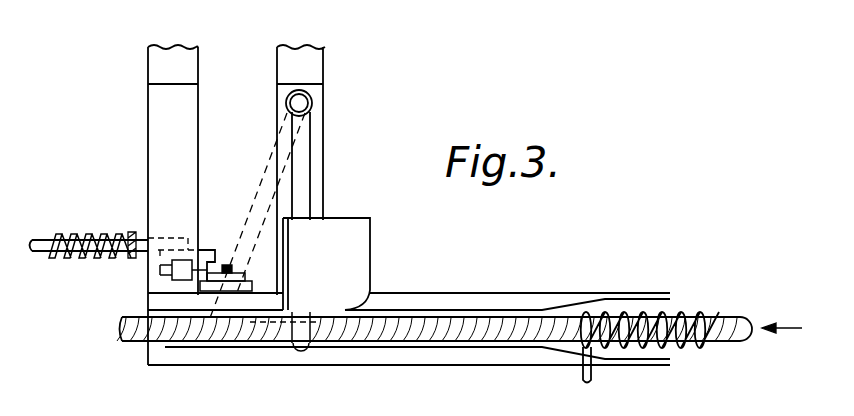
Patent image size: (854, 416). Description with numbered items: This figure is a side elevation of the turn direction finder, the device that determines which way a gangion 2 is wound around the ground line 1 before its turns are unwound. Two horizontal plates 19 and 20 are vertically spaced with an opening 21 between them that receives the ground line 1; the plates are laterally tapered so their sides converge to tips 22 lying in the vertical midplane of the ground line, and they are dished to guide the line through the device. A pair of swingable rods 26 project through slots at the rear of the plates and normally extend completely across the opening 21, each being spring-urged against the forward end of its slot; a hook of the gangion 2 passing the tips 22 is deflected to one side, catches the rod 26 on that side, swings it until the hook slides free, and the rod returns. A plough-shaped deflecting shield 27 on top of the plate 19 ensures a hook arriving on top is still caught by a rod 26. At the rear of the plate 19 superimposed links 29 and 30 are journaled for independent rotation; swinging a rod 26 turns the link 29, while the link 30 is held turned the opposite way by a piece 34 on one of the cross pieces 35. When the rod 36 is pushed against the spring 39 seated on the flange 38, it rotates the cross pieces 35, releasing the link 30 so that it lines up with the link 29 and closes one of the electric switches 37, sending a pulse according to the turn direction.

The ground line 1 is at (728, 315).
The gangion 2 is at (693, 315).
The upper horizontal plate 19 is at (543, 295).
The lower horizontal plate 20 is at (550, 362).
The opening 21 is at (483, 315).
The tips 22 is at (648, 293).
The swingable rods 26 is at (302, 186).
The deflecting shield 27 is at (356, 240).
The link 29 is at (250, 287).
The link 30 is at (242, 273).
The piece 34 is at (218, 262).
The cross pieces 35 is at (201, 249).
The rod 36 is at (43, 252).
The electric switches 37 is at (150, 285).
The flange 38 is at (53, 236).
The spring 39 is at (88, 236).